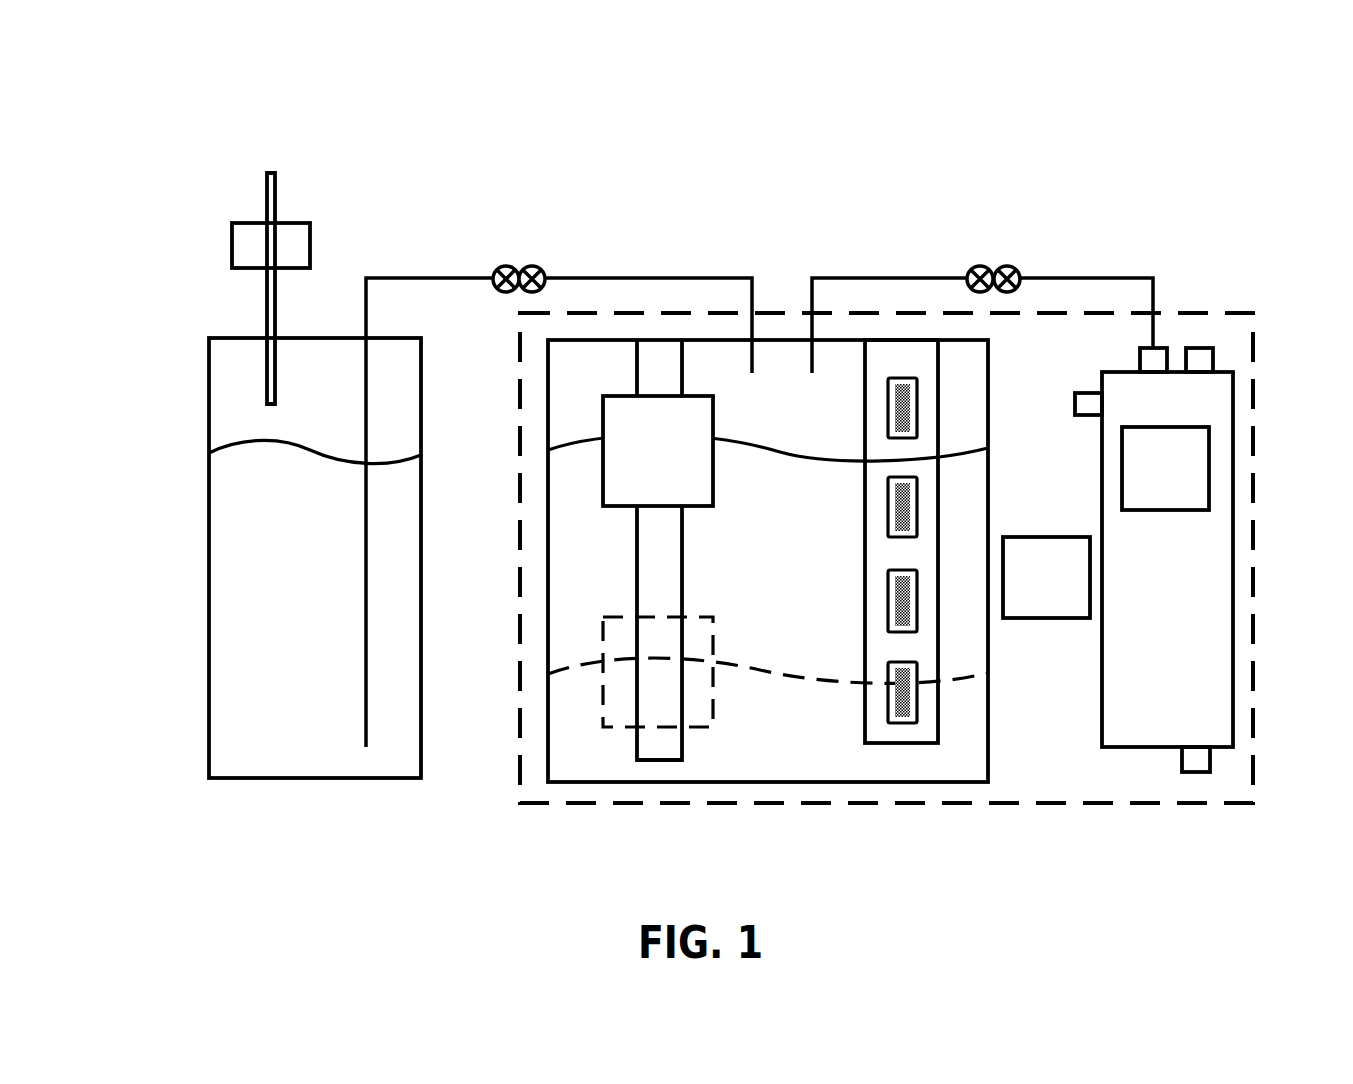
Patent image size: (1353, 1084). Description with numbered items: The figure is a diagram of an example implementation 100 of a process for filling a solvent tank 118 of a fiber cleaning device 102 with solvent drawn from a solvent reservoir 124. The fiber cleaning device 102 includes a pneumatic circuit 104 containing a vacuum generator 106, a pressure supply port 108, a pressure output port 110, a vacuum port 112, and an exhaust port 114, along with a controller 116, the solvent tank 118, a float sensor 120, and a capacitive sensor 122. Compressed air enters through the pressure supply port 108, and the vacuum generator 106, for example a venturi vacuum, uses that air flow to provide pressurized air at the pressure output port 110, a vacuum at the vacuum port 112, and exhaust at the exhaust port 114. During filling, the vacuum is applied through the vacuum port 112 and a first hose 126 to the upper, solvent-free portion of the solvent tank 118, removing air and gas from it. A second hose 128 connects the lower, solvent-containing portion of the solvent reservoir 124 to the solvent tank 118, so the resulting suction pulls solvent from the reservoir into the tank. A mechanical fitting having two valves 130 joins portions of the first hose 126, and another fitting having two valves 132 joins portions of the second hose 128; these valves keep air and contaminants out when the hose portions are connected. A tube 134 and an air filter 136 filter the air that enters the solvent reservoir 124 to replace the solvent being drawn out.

The example implementation 100 is at (192, 66).
The fiber cleaning device 102 is at (1212, 313).
The pneumatic circuit 104 is at (1167, 559).
The vacuum generator 106 is at (1165, 468).
The pressure supply port 108 is at (1210, 758).
The pressure output port 110 is at (1213, 358).
The vacuum port 112 is at (1140, 355).
The exhaust port 114 is at (1088, 416).
The controller 116 is at (1046, 577).
The solvent tank 118 is at (768, 561).
The float sensor 120 is at (710, 531).
The capacitive sensor 122 is at (846, 590).
The solvent reservoir 124 is at (315, 558).
The first hose 126 is at (1103, 278).
The second hose 128 is at (670, 278).
The valves 130 is at (1001, 267).
The valves 132 is at (527, 267).
The tube 134 is at (278, 190).
The air filter 136 is at (312, 228).